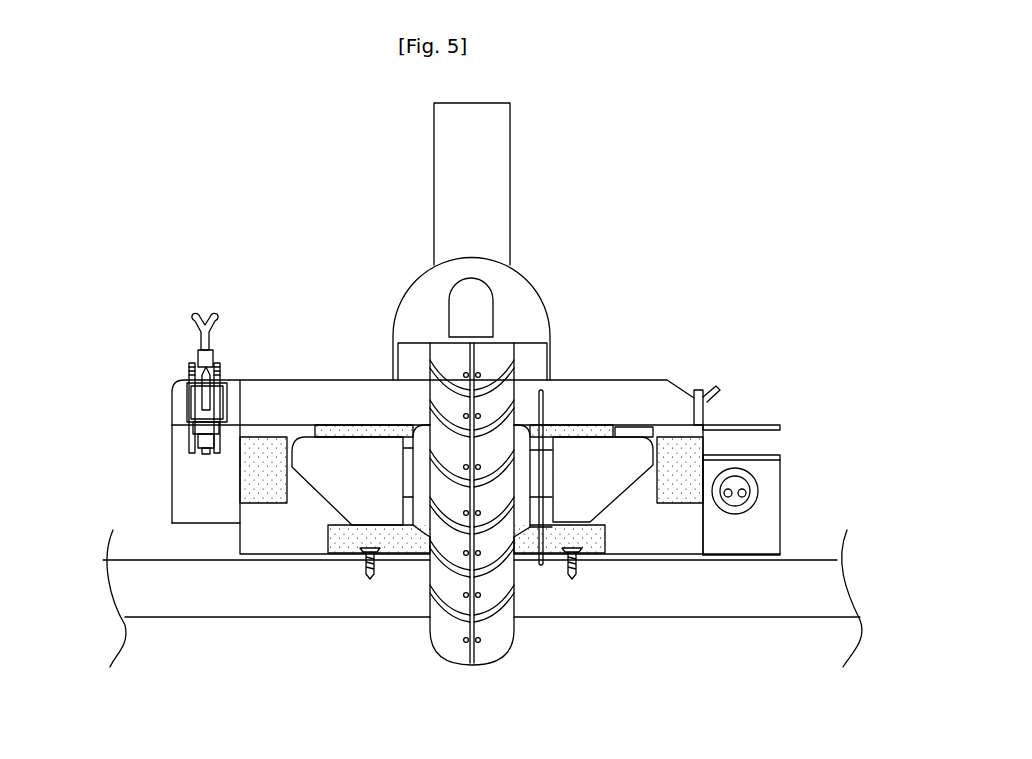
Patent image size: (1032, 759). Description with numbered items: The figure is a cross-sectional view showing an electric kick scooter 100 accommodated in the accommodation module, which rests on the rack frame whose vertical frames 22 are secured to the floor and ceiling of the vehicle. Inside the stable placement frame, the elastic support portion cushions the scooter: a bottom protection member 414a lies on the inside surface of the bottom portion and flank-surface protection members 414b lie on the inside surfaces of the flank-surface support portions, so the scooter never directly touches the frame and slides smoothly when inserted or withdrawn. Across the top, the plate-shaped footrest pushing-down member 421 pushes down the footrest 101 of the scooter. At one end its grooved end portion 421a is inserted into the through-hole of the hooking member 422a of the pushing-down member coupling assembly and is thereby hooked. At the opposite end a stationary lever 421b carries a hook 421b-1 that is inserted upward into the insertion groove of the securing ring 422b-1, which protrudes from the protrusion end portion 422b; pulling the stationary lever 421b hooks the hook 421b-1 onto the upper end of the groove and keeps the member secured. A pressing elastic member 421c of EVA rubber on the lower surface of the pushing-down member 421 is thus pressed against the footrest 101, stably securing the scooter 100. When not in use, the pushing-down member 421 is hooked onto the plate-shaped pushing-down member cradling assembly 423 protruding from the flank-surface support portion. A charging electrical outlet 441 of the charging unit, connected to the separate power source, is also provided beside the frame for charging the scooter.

The vertical frame 22 is at (812, 598).
The electric kick scooter 100 is at (500, 630).
The footrest 101 is at (610, 460).
The bottom protection member 414a is at (607, 537).
The flank-surface protection member 414b is at (268, 493).
The footrest pushing-down member 421 is at (277, 408).
The grooved end portion 421a is at (718, 400).
The stationary lever 421b is at (195, 337).
The hook 421b-1 is at (195, 432).
The pressing elastic member 421c is at (359, 432).
The hooking member 422a is at (710, 402).
The protrusion end portion 422b is at (172, 507).
The securing ring 422b-1 is at (203, 455).
The pushing-down member cradling assembly 423 is at (780, 428).
The charging electrical outlet 441 is at (753, 497).